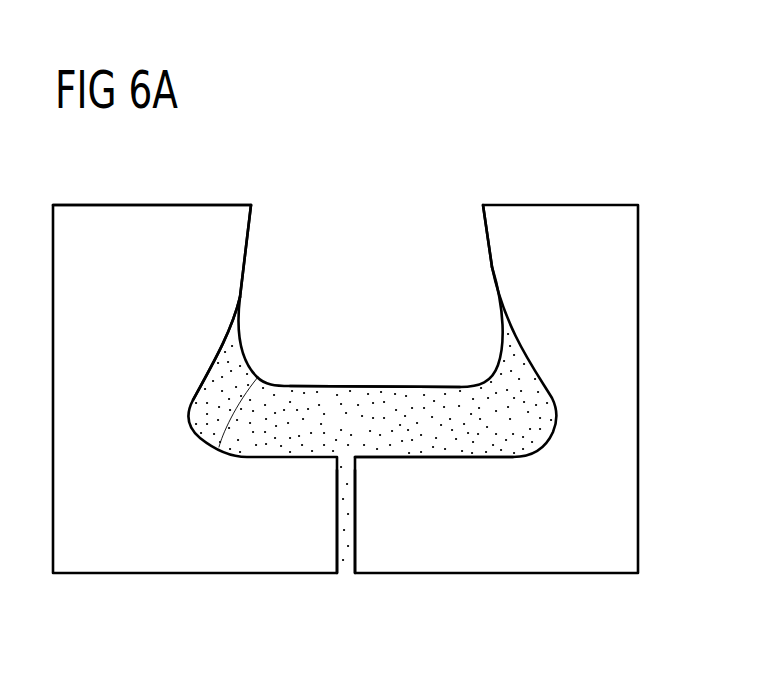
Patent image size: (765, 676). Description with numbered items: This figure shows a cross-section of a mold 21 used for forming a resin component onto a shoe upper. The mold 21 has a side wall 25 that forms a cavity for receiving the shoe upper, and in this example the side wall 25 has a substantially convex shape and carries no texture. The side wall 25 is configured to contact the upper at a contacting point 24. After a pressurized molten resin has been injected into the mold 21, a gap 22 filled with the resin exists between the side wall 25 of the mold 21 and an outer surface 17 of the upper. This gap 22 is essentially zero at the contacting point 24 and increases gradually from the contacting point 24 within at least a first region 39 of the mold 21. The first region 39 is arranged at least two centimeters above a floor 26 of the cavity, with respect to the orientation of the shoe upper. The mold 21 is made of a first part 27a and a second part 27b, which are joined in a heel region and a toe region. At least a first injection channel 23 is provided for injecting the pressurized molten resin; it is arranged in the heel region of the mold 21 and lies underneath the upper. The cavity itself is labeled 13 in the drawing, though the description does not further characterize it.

The mold 21 is at (178, 207).
The contacting point 24 is at (245, 270).
The first region 39 is at (242, 310).
The recess / cavity 13 is at (368, 357).
The side wall 25 is at (226, 340).
The gap 22 is at (216, 376).
The outer surface 17 is at (219, 447).
The first injection channel 23 is at (337, 505).
The floor 26 is at (455, 458).
The first part 27a is at (211, 560).
The second part 27b is at (498, 560).